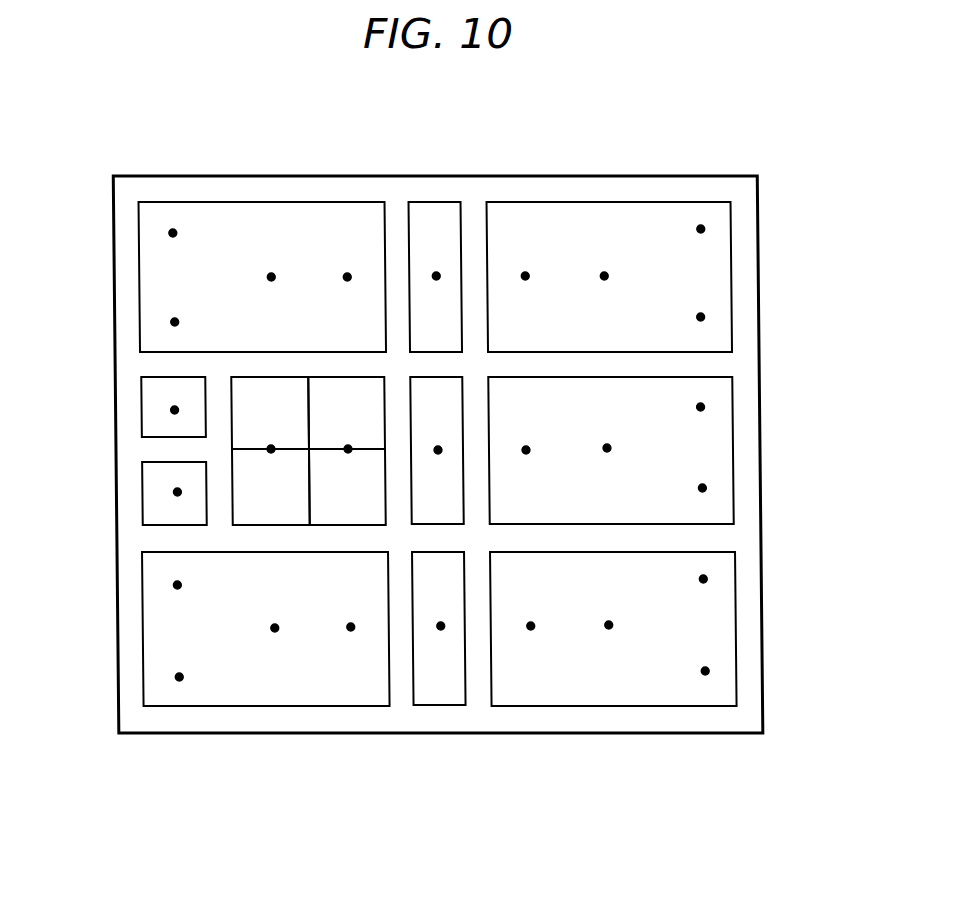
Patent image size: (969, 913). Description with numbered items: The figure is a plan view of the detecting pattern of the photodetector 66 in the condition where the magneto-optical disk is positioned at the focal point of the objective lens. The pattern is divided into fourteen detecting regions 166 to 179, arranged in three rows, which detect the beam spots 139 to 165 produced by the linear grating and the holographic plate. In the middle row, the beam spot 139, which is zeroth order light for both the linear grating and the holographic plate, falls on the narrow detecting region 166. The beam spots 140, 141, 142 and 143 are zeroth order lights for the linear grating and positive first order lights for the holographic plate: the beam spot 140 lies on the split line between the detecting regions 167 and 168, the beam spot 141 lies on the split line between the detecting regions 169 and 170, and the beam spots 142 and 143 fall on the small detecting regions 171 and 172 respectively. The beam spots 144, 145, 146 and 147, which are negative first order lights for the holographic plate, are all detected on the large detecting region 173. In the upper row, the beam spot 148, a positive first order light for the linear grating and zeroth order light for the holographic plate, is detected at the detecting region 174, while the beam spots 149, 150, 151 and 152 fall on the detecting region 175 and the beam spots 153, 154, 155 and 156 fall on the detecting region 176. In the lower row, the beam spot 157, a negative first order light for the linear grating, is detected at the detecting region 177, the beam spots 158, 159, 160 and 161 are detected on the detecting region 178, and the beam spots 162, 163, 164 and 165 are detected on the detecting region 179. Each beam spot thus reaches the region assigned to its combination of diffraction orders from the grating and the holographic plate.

The photodetector 66 is at (182, 842).
The beam spot 139 is at (438, 447).
The beam spot 140 is at (271, 446).
The beam spot 141 is at (348, 446).
The beam spot 142 is at (173, 412).
The beam spot 143 is at (180, 492).
The beam spot 144 is at (528, 448).
The beam spot 145 is at (606, 451).
The beam spot 146 is at (698, 407).
The beam spot 147 is at (699, 488).
The beam spot 148 is at (438, 280).
The beam spot 149 is at (273, 281).
The beam spot 150 is at (349, 273).
The beam spot 151 is at (175, 233).
The beam spot 152 is at (179, 321).
The beam spot 153 is at (528, 272).
The beam spot 154 is at (607, 272).
The beam spot 155 is at (703, 233).
The beam spot 156 is at (698, 318).
The beam spot 157 is at (439, 622).
The beam spot 158 is at (271, 625).
The beam spot 159 is at (349, 631).
The beam spot 160 is at (176, 589).
The beam spot 161 is at (181, 677).
The beam spot 162 is at (529, 622).
The beam spot 163 is at (607, 629).
The beam spot 164 is at (698, 579).
The beam spot 165 is at (703, 667).
The detecting region 166 is at (445, 428).
The detecting region 167 is at (254, 383).
The detecting region 168 is at (257, 473).
The detecting region 169 is at (374, 402).
The detecting region 170 is at (355, 493).
The detecting region 171 is at (163, 400).
The detecting region 172 is at (165, 503).
The detecting region 173 is at (707, 442).
The detecting region 174 is at (439, 232).
The detecting region 175 is at (272, 230).
The detecting region 176 is at (650, 228).
The detecting region 177 is at (440, 682).
The detecting region 178 is at (280, 670).
The detecting region 179 is at (556, 663).